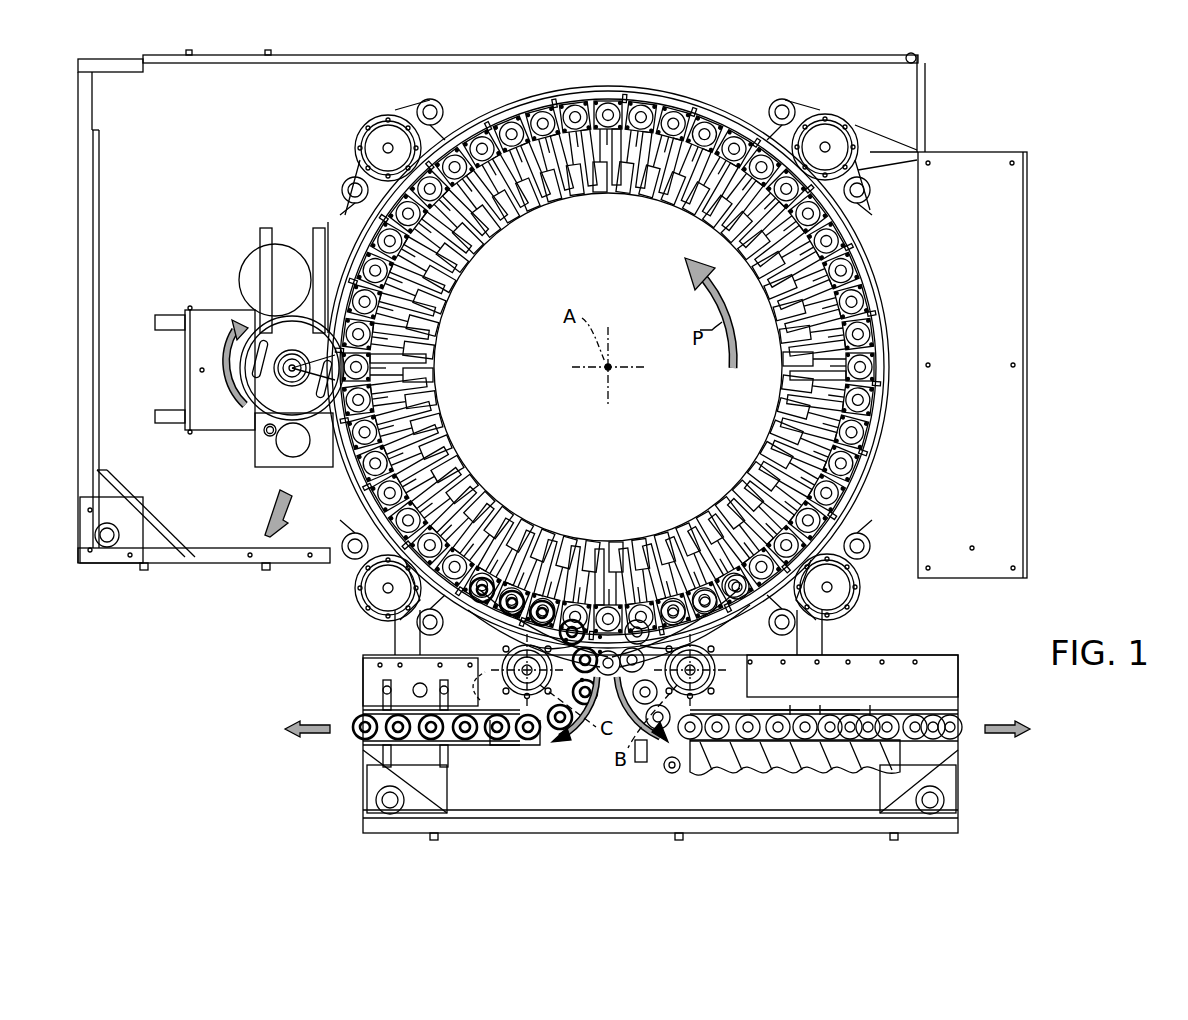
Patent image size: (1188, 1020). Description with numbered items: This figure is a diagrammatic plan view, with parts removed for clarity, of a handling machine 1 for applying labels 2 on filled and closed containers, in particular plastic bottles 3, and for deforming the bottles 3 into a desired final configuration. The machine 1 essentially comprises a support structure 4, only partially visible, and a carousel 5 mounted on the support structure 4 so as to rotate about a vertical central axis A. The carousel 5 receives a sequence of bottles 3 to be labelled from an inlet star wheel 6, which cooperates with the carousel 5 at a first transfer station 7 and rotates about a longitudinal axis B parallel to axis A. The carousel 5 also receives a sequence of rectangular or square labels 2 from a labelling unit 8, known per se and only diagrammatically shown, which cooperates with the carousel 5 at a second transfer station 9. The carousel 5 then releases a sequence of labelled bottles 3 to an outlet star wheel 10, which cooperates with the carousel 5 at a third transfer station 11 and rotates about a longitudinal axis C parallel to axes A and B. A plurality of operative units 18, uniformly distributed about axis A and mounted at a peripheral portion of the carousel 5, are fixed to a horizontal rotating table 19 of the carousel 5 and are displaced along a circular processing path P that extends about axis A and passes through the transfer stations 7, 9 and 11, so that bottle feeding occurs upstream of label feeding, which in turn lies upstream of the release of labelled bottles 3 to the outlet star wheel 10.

The handling machine 1 is at (1048, 134).
The labels 2 is at (283, 311).
The plastic bottles 3 is at (778, 740).
The support structure 4 is at (862, 50).
The carousel 5 is at (716, 97).
The inlet star wheel 6 is at (678, 700).
The first transfer station 7 is at (734, 622).
The labelling unit 8 is at (205, 305).
The second transfer station 9 is at (323, 352).
The outlet star wheel 10 is at (517, 692).
The third transfer station 11 is at (490, 622).
The operative units 18 is at (877, 408).
The rotating table 19 is at (662, 101).